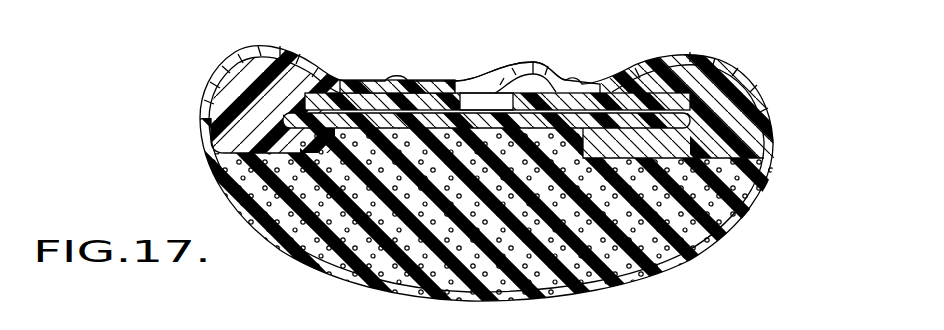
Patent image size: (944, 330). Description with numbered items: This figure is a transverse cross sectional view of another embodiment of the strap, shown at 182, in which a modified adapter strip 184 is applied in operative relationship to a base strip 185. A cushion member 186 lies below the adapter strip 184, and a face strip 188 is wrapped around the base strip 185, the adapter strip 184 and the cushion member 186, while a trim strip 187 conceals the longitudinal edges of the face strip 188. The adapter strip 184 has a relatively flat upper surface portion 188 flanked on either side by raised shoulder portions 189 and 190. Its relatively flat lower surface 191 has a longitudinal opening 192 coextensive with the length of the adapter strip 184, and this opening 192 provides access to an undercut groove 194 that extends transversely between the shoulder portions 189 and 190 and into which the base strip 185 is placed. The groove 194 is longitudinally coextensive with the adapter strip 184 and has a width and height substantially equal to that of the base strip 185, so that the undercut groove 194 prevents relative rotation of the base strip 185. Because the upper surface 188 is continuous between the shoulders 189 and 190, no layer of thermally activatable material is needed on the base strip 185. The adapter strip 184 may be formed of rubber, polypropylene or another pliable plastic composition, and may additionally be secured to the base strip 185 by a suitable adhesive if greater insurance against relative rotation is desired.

The strap embodiment 182 is at (568, 50).
The adapter strip 184 is at (737, 99).
The base strip 185 is at (706, 78).
The cushion member 186 is at (771, 158).
The trim strip 187 is at (603, 84).
The face strip 188 is at (624, 112).
The raised shoulder portion 189 is at (692, 72).
The raised shoulder portion 190 is at (272, 66).
The lower surface 191 is at (213, 159).
The longitudinal opening 192 is at (441, 134).
The undercut groove 194 is at (305, 113).